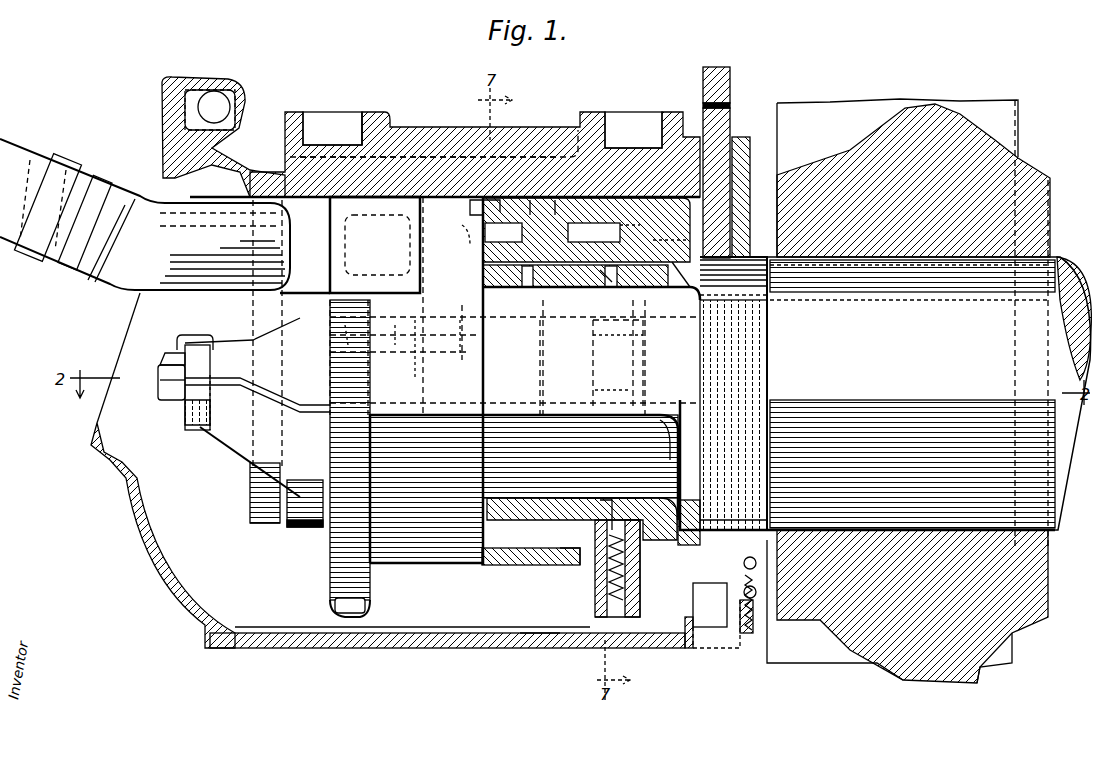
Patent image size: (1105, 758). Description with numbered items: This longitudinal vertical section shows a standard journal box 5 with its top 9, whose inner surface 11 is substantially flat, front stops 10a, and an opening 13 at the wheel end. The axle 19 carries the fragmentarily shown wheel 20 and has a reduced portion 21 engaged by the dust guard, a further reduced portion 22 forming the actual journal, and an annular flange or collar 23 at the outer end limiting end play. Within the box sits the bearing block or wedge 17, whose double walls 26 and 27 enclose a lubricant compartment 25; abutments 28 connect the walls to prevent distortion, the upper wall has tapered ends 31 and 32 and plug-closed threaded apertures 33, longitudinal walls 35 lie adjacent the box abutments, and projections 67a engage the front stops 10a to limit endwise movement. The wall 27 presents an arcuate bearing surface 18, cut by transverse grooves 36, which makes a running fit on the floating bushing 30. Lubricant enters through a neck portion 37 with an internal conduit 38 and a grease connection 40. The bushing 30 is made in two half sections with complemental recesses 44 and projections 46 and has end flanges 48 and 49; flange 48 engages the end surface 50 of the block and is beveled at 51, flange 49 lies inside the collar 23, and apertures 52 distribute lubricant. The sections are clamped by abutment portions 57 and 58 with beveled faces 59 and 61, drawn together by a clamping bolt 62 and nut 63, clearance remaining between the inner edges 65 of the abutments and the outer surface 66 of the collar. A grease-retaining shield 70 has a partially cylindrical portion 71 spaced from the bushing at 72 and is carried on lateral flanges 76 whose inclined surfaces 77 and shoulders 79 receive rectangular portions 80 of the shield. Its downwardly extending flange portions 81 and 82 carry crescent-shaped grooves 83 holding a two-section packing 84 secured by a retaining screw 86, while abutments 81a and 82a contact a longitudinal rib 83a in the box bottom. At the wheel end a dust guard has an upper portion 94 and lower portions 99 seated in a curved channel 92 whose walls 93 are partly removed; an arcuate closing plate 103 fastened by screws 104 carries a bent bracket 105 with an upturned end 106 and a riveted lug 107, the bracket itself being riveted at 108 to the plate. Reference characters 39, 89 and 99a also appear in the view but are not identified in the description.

The journal box 5 is at (268, 648).
The top 9 is at (410, 165).
The front stops 10a is at (245, 180).
The inner surface of top wall 11 is at (440, 185).
The opening 13 is at (770, 265).
The bearing block 17 is at (530, 198).
The arcuate bearing surface 18 is at (500, 270).
The axle 19 is at (929, 325).
The wheel 20 is at (1020, 160).
The reduced portion 21 is at (770, 300).
The extended reduced portion 22 is at (670, 228).
The annular flange 23 is at (258, 523).
The compartment 25 is at (600, 225).
The upper wall 26 is at (556, 198).
The lower wall 27 is at (586, 229).
The abutments 28 is at (525, 270).
The floating bushing 30 is at (520, 520).
The tapered end 31 is at (365, 135).
The tapered end 32 is at (633, 130).
The threaded apertures 33 is at (490, 200).
The longitudinal walls 35 is at (445, 262).
The transverse grooves 36 is at (470, 238).
The neck portion 37 is at (247, 298).
The internal conduit 38 is at (135, 300).
The valve 39 is at (470, 210).
The grease connection 40 is at (48, 152).
The recess 44 is at (618, 348).
The projection 46 is at (630, 400).
The radial flange 48 is at (733, 393).
The end flange 49 is at (300, 527).
The end surface 50 is at (733, 291).
The beveled portion 51 is at (670, 291).
The apertures 52 is at (610, 275).
The abutment portion 57 is at (170, 356).
The abutment portion 58 is at (172, 400).
The beveled face 59 is at (160, 378).
The inclined face 61 is at (200, 378).
The clamping bolt 62 is at (192, 340).
The retaining nut 63 is at (185, 420).
The inner edges 65 is at (215, 397).
The outer surface 66 is at (250, 480).
The projections 67a is at (332, 128).
The protecting shield 70 is at (445, 563).
The partially cylindrical portion 71 is at (500, 565).
The space 72 is at (572, 565).
The lateral flange 76 is at (455, 349).
The inclined upper surfaces 77 is at (348, 343).
The shoulders 79 is at (392, 343).
The rectangular portions 80 is at (405, 350).
The flange portion 81 is at (330, 603).
The abutment 81a is at (348, 613).
The flange portion 82 is at (625, 580).
The abutment 82a is at (627, 603).
The crescent-shaped groove 83 is at (600, 617).
The longitudinal rib 83a is at (520, 648).
The crescent-shaped packing 84 is at (600, 498).
The retaining screw 86 is at (600, 470).
The seal 89 is at (659, 432).
The curved channel 92 is at (712, 640).
The curved walls 93 is at (728, 630).
The upper portion 94 is at (735, 160).
The lower portions 99 is at (775, 505).
The plate end 99a is at (733, 100).
The arcuate closing plate 103 is at (755, 632).
The screws 104 is at (757, 563).
The angularly bent member 105 is at (755, 612).
The upwardly bent end 106 is at (690, 545).
The lug 107 is at (775, 520).
The rivet 108 is at (757, 592).